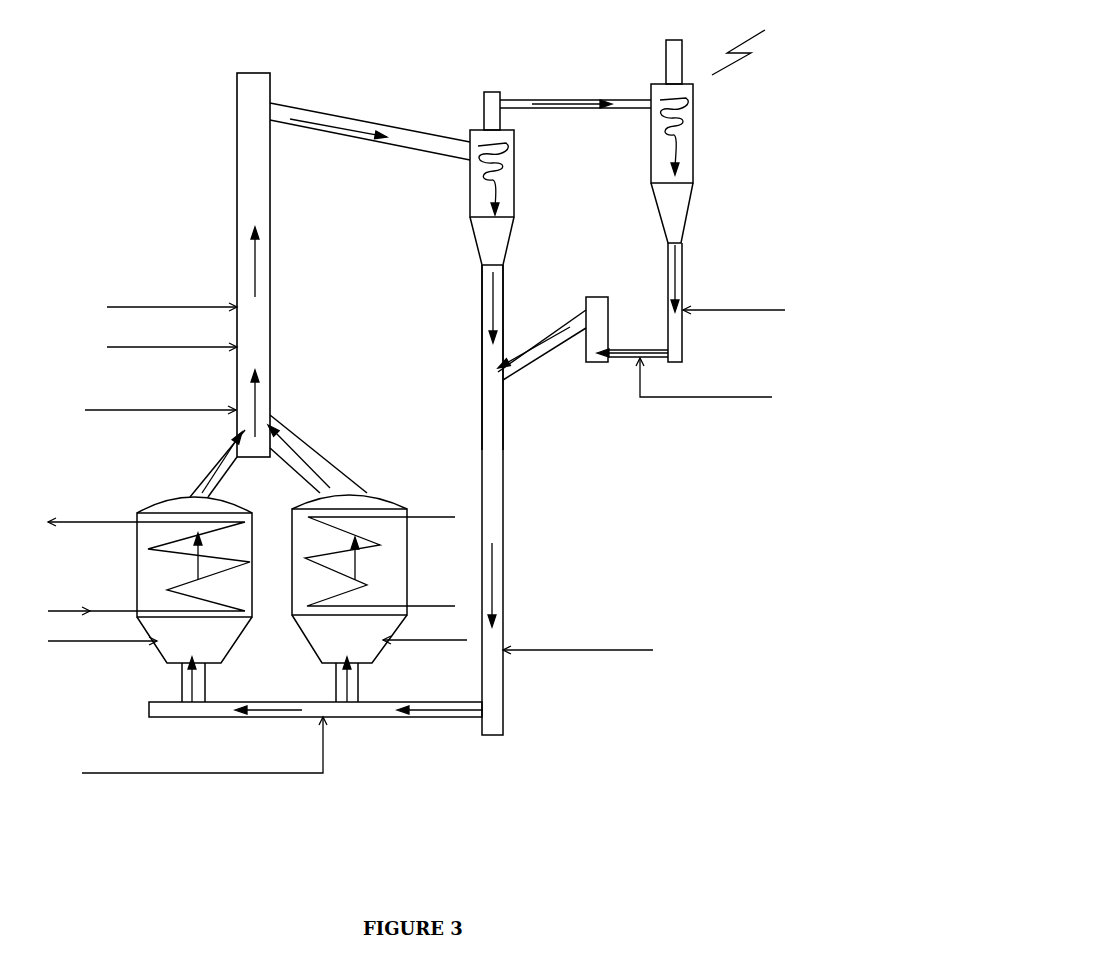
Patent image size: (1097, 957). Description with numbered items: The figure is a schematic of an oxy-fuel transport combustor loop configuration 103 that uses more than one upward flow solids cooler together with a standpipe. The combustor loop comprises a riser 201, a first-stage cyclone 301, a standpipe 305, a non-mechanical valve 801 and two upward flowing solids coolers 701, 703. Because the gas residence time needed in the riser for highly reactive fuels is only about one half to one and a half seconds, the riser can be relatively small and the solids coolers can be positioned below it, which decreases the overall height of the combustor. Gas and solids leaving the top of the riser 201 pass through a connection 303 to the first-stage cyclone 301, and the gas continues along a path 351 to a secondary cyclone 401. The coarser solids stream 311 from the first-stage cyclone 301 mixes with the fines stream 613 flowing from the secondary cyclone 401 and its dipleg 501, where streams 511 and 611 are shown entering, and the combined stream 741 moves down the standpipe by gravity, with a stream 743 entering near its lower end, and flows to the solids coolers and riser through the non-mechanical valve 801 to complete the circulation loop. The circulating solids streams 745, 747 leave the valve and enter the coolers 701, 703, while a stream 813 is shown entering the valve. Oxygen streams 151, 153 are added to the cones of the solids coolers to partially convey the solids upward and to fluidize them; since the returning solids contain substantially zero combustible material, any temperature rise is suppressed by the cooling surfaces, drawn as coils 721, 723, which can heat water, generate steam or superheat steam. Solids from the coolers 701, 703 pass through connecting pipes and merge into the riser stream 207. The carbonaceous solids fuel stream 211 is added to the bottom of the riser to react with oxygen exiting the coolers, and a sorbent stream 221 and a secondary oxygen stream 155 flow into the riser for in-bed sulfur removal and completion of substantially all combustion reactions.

The combustor loop configuration 103 is at (748, 46).
The oxygen stream 151 is at (102, 634).
The oxygen stream 153 is at (425, 632).
The secondary oxygen stream 155 is at (172, 300).
The riser 201 is at (237, 260).
The riser stream 207 is at (257, 388).
The carbonaceous solids fuel stream 211 is at (160, 405).
The sorbent stream 221 is at (172, 340).
The first-stage cyclone 301 is at (470, 128).
The gas conduit from first cyclone 303 is at (570, 103).
The standpipe 305 is at (482, 285).
The coarser solids stream 311 is at (482, 335).
The gas flow to second cyclone 351 is at (612, 102).
The secondary cyclone 401 is at (652, 85).
The dipleg 501 is at (667, 292).
The aeration gas inlet 511 is at (734, 303).
The transport gas inlet 611 is at (704, 377).
The fines stream 613 is at (520, 370).
The upward flowing solids cooler 701 is at (367, 493).
The upward flowing solids cooler 703 is at (152, 498).
The heat exchange coil of first reactor 721 is at (168, 590).
The heat exchange coil of second reactor 723 is at (365, 583).
The combined stream 741 is at (493, 575).
The gas inlet to downcomer 743 is at (578, 642).
The circulating solids stream 745 is at (422, 711).
The circulating solids stream 747 is at (257, 710).
The non-mechanical valve 801 is at (367, 718).
The fluidization gas inlet to conduit 813 is at (204, 745).